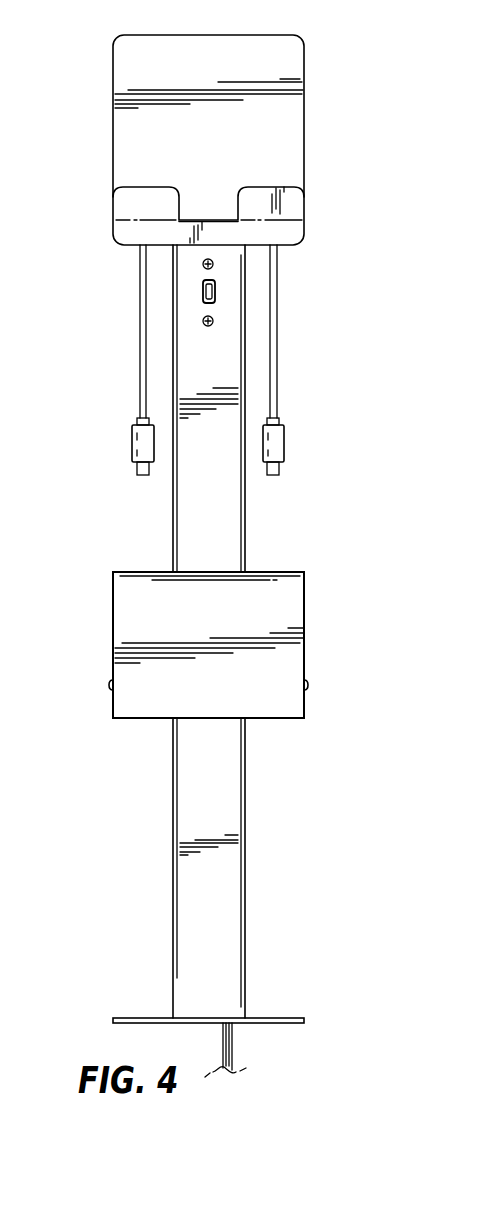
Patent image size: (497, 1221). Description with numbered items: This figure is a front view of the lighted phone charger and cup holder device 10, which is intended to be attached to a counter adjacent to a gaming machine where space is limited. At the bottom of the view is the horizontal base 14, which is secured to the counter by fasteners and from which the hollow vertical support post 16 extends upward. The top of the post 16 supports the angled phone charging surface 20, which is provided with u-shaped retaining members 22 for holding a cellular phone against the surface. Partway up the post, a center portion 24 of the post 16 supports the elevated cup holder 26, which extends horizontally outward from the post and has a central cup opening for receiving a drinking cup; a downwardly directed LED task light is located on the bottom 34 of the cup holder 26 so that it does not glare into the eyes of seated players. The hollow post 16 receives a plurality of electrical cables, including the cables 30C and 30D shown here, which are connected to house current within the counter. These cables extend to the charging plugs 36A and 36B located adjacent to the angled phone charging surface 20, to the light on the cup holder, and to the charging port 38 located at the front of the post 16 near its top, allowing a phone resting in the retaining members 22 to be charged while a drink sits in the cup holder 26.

The lighted phone charger and cup holder device 10 is at (82, 49).
The horizontal base 14 is at (278, 1018).
The hollow vertical support post 16 is at (197, 522).
The angled phone charging surface 20 is at (287, 62).
The u-shaped retaining members 22 is at (293, 204).
The center portion 24 is at (223, 559).
The elevated cup holder 26 is at (270, 607).
The electrical cable 30C is at (277, 339).
The electrical cable 30D is at (140, 339).
The bottom 34 is at (272, 718).
The charging plug 36A is at (284, 435).
The charging plug 36B is at (132, 435).
The charging port 38 is at (215, 293).